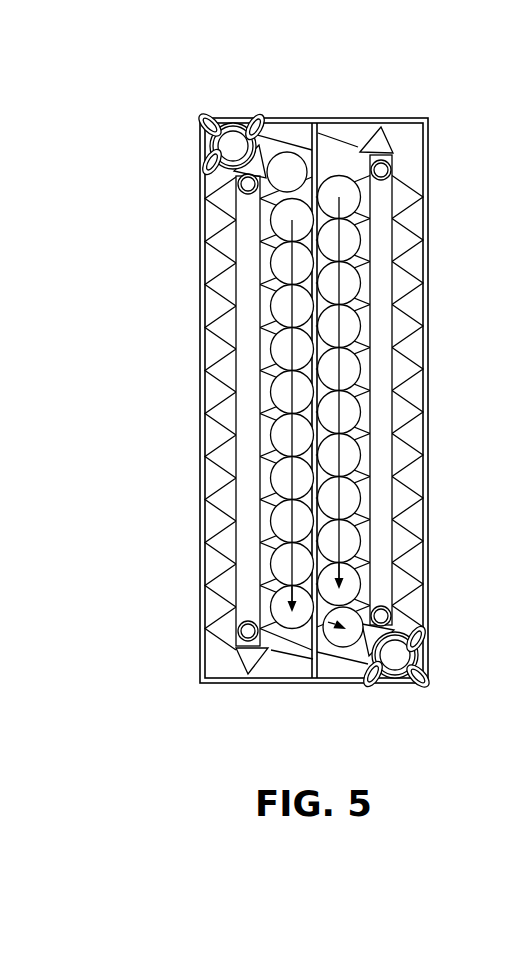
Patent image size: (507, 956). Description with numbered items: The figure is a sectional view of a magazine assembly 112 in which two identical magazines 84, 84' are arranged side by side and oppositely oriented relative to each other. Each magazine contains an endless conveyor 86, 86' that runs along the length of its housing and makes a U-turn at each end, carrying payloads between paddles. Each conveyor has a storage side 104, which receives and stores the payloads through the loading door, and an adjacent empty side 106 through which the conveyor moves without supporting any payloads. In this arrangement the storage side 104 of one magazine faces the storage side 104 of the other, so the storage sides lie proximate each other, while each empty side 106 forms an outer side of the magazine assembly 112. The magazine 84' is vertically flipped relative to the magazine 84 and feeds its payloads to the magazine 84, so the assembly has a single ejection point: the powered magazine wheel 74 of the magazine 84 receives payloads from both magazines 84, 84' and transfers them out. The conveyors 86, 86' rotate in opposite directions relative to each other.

The magazine assembly 112 is at (190, 147).
The conveyor 86' is at (217, 403).
The magazine 84' is at (174, 413).
The storage side 104 is at (300, 430).
The empty side 106 is at (218, 520).
The conveyor 86 is at (402, 395).
The magazine 84 is at (437, 412).
The powered magazine wheel 74 is at (424, 640).